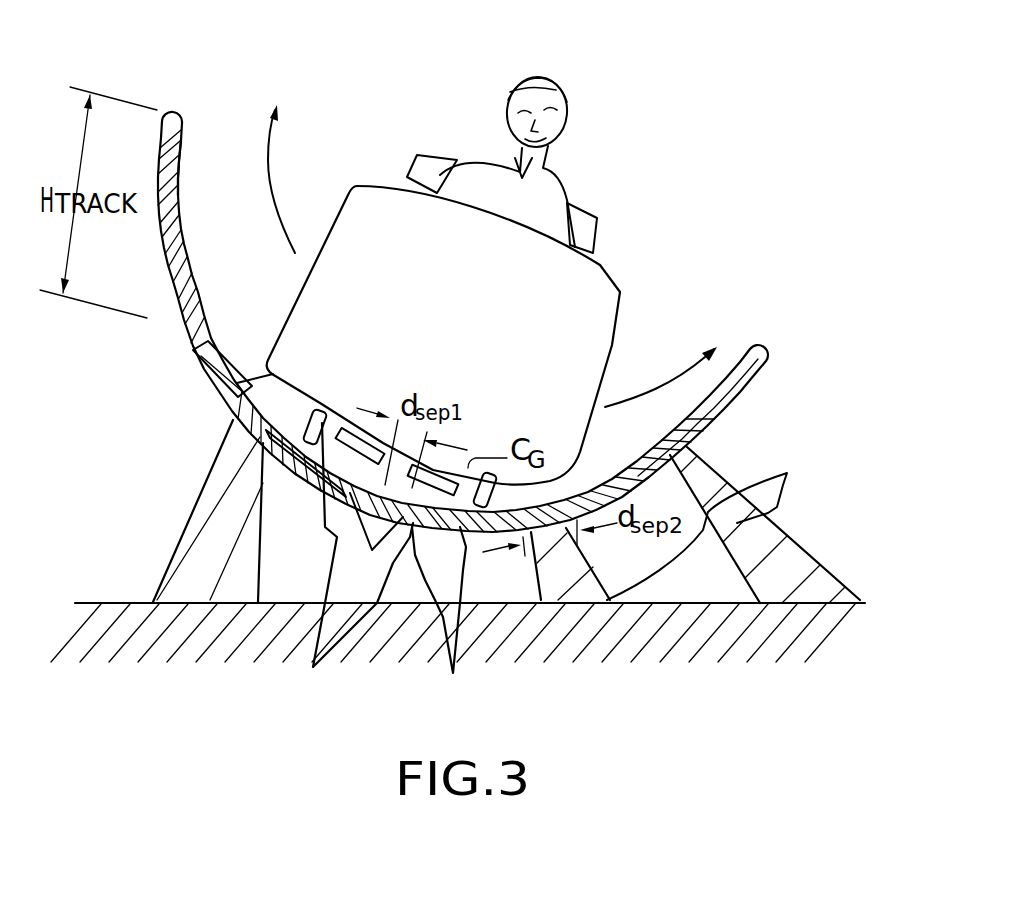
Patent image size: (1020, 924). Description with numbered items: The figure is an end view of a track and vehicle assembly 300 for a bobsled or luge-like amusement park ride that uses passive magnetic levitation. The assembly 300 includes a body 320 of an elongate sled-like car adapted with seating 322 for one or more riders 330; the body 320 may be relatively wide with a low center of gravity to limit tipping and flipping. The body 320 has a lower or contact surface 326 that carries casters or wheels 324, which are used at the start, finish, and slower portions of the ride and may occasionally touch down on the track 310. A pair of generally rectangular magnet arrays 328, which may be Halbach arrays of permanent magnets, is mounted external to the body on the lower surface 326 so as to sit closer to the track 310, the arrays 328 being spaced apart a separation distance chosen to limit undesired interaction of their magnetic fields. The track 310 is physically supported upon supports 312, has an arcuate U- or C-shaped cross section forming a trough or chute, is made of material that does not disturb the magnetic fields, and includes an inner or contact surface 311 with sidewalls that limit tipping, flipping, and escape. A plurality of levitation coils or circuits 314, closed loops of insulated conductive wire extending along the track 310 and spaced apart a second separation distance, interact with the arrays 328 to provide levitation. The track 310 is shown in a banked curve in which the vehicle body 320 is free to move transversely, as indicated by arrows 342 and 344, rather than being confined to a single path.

The track and vehicle assembly 300 is at (736, 105).
The track 310 is at (740, 398).
The inner or contact surface 311 is at (187, 280).
The supports 312 is at (785, 478).
The levitation coils or circuits 314 is at (442, 618).
The body 320 is at (613, 340).
The seating 322 is at (600, 228).
The casters or wheels 324 is at (349, 565).
The lower or contact surface 326 is at (220, 397).
The magnet arrays 328 is at (376, 542).
The riders 330 is at (573, 192).
The arrow 342 is at (272, 165).
The arrow 344 is at (737, 350).